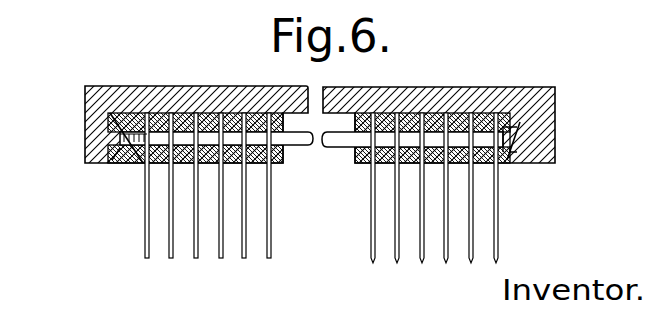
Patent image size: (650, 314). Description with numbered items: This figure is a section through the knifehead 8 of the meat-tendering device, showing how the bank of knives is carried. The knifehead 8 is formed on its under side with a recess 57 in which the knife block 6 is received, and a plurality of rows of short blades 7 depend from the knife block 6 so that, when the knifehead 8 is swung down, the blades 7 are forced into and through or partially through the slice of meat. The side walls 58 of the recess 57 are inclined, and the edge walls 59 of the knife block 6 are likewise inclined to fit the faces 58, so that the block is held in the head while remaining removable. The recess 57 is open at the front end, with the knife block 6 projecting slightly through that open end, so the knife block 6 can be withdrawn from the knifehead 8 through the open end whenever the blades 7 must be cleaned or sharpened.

The knife block 6 is at (140, 165).
The short blades 7 is at (269, 258).
The knifehead 8 is at (530, 100).
The recess 57 is at (522, 136).
The side walls of recess 58 is at (112, 160).
The edge walls of knife block 59 is at (126, 128).